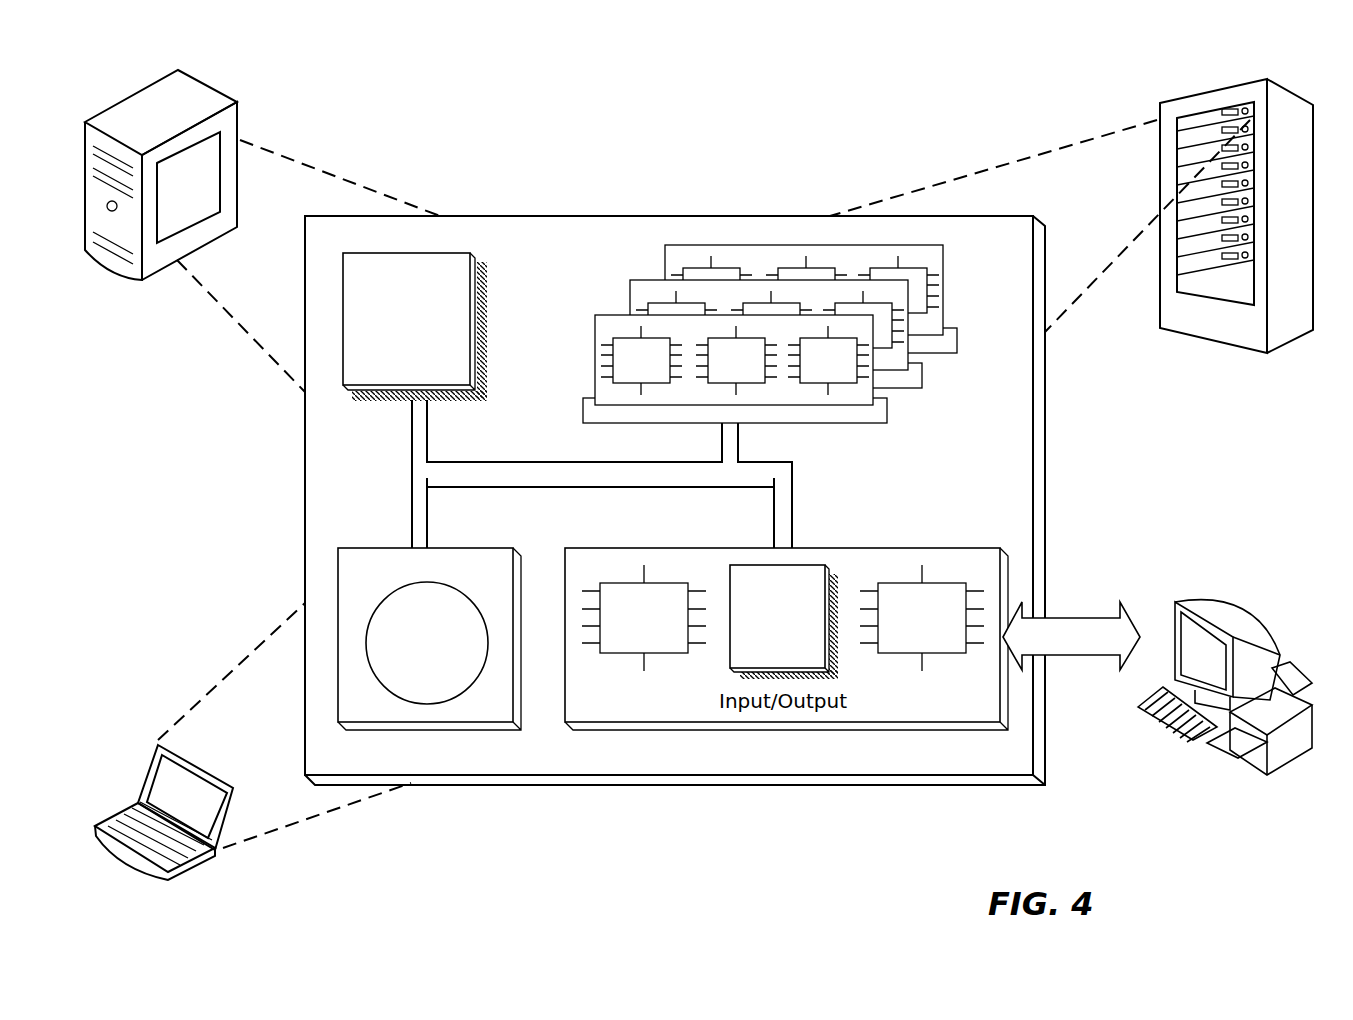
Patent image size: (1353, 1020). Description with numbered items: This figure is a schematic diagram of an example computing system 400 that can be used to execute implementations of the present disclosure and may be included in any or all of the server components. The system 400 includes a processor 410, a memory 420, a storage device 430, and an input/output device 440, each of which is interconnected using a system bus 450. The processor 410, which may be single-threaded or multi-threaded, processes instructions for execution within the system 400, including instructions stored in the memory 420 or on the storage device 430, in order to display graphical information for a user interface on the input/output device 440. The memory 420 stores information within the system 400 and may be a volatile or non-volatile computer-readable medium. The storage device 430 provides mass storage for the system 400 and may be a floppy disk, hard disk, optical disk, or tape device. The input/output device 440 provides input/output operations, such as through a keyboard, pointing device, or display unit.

The computing system 400 is at (493, 92).
The processor 410 is at (430, 379).
The memory 420 is at (946, 382).
The storage device 430 is at (472, 712).
The input/output device 440 is at (1173, 607).
The system bus 450 is at (600, 479).